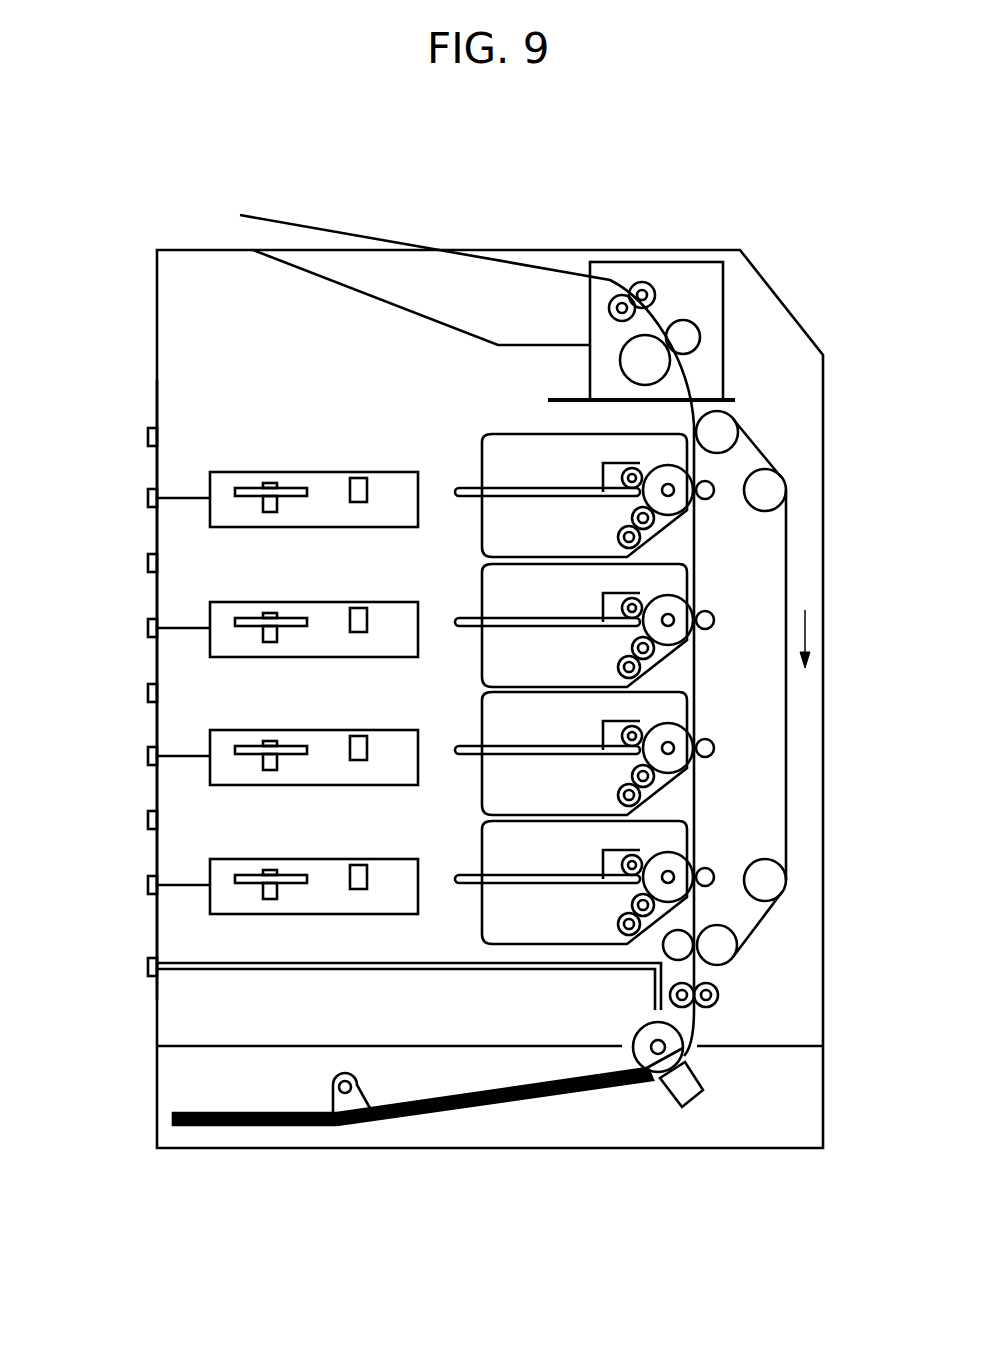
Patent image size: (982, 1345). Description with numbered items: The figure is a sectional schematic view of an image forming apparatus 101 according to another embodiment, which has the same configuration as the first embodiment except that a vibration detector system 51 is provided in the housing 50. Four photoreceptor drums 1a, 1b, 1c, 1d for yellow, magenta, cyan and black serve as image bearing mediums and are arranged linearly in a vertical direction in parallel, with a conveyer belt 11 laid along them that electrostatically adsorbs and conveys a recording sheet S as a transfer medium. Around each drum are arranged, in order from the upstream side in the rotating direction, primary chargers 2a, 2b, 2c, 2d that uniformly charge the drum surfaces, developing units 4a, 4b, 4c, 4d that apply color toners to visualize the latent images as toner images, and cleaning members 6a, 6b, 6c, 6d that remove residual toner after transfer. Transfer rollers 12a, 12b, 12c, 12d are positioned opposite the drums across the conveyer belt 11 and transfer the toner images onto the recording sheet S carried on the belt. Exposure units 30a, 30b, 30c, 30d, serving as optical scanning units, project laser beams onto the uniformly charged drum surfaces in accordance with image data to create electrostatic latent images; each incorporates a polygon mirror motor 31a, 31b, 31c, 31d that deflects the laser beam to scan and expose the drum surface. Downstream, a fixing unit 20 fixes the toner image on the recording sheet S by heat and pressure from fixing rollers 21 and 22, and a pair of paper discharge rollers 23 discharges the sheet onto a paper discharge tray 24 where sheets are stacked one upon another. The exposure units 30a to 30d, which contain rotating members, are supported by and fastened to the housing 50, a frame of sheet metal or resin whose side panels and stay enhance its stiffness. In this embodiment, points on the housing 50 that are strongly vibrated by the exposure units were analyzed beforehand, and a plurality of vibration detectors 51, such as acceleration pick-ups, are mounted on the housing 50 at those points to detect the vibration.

The image forming apparatus 101 is at (490, 640).
The conveyer belt 11 is at (788, 805).
The photoreceptor drum 1a is at (693, 872).
The photoreceptor drum 1b is at (693, 743).
The photoreceptor drum 1c is at (692, 615).
The photoreceptor drum 1d is at (683, 479).
The primary charger 2a is at (547, 866).
The primary charger 2b is at (547, 737).
The primary charger 2c is at (547, 609).
The primary charger 2d is at (618, 484).
The developing unit 4a is at (584, 883).
The developing unit 4b is at (584, 754).
The developing unit 4c is at (584, 626).
The developing unit 4d is at (584, 496).
The cleaning member 6a is at (611, 850).
The cleaning member 6b is at (611, 721).
The cleaning member 6c is at (612, 593).
The cleaning member 6d is at (646, 461).
The transfer roller 12a is at (730, 900).
The transfer roller 12b is at (730, 771).
The transfer roller 12c is at (730, 643).
The transfer roller 12d is at (709, 498).
The fixing unit 20 is at (700, 276).
The fixing roller 21 is at (633, 368).
The fixing roller 22 is at (700, 335).
The paper discharge rollers 23 is at (640, 282).
The paper discharge tray 24 is at (575, 295).
The exposure unit 30a is at (291, 861).
The exposure unit 30b is at (291, 732).
The exposure unit 30c is at (292, 604).
The exposure unit 30d is at (220, 483).
The polygon mirror motor 31a is at (274, 853).
The polygon mirror motor 31b is at (275, 724).
The polygon mirror motor 31c is at (275, 596).
The polygon mirror motor 31d is at (263, 487).
The housing 50 is at (157, 380).
The vibration detector 51 is at (148, 437).
The recording sheet S is at (260, 1128).